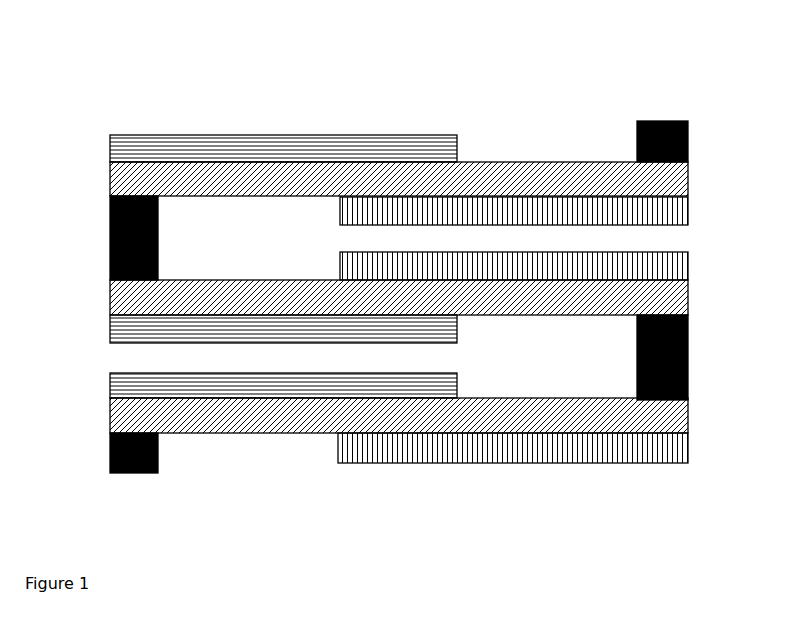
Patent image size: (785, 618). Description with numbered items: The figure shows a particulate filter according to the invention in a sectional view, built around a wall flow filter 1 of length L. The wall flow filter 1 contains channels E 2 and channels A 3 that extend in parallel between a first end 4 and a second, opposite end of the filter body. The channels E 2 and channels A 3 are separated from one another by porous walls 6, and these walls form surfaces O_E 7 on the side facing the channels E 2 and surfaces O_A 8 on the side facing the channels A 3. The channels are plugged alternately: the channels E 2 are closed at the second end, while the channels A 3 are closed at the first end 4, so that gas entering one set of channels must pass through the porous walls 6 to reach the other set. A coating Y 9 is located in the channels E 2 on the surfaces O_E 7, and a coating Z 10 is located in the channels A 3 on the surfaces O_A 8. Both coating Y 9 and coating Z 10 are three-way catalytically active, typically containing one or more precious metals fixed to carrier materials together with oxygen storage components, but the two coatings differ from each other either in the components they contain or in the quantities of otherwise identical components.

The wall flow filter 1 is at (399, 106).
The channels E 2 is at (283, 356).
The channels A 3 is at (513, 238).
The first end 4 is at (369, 297).
The porous walls 6 is at (287, 436).
The surfaces O_E 7 is at (522, 396).
The surfaces O_A 8 is at (212, 278).
The coating Y 9 is at (190, 133).
The coating Z 10 is at (657, 466).